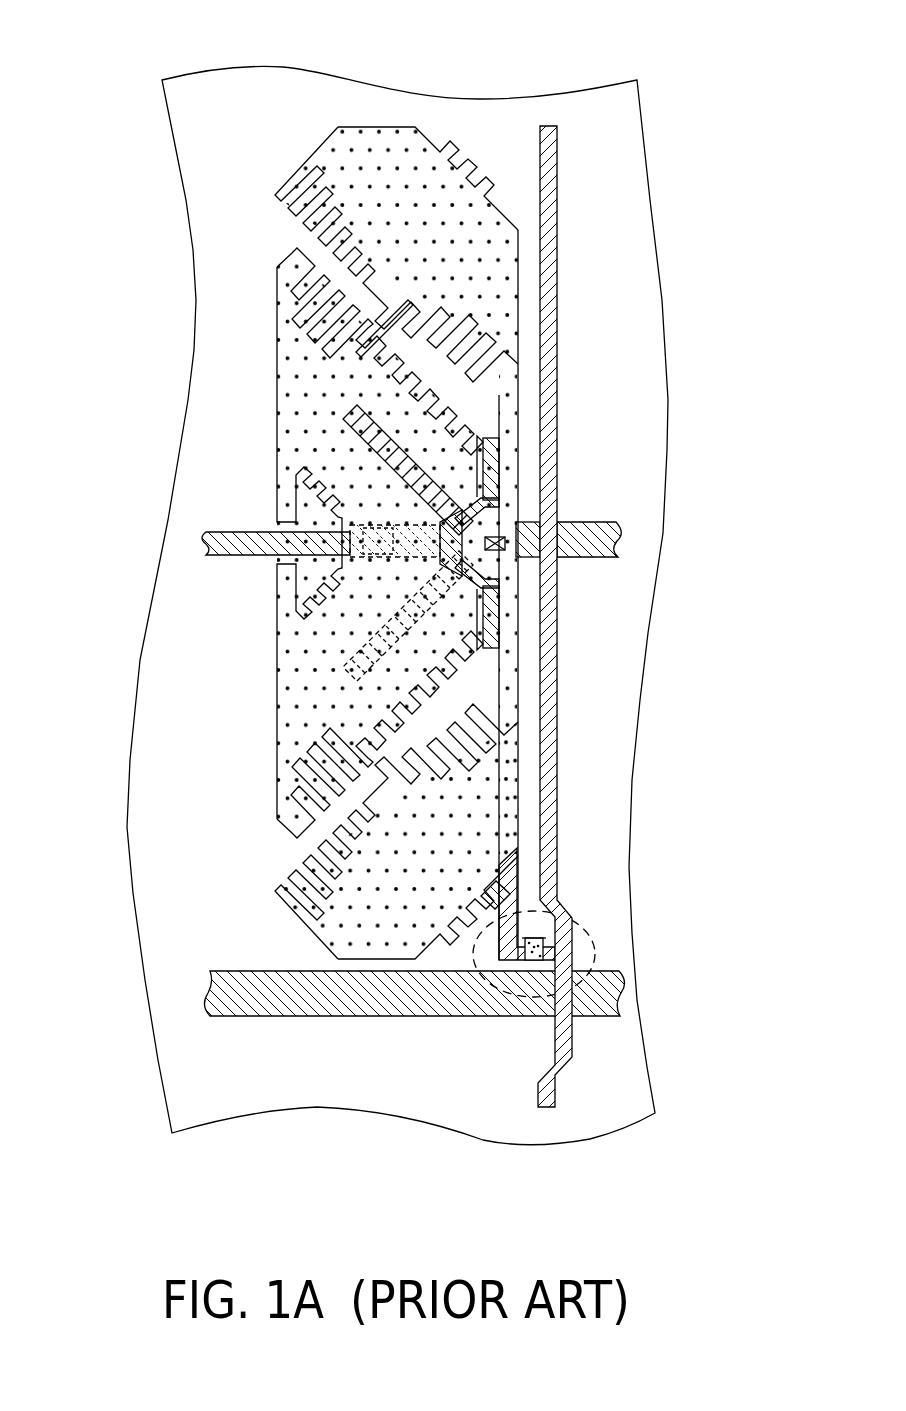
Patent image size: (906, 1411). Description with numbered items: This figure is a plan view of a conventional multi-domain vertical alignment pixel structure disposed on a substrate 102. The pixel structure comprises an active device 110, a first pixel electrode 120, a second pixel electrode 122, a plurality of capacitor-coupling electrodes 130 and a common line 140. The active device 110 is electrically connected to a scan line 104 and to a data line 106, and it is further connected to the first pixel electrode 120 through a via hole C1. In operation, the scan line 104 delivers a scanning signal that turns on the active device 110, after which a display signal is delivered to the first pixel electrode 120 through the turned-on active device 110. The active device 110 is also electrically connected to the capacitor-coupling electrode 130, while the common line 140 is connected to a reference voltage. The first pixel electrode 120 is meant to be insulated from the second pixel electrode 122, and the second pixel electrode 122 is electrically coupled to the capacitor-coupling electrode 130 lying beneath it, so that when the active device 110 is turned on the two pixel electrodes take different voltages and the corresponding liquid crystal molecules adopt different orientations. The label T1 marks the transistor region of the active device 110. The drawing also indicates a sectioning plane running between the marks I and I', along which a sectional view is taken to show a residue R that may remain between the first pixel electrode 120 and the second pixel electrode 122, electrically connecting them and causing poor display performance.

The substrate 102 is at (622, 1100).
The scan line 104 is at (267, 993).
The data line 106 is at (558, 760).
The active device 110 is at (593, 928).
The first pixel electrode 120 is at (395, 193).
The second pixel electrode 122 is at (305, 362).
The capacitor-coupling electrode 130 is at (355, 405).
The common line 140 is at (204, 543).
The via hole C1 is at (518, 548).
The residue R is at (470, 396).
The thin film transistor T1 is at (308, 248).
The sectioning plane I-I' I is at (374, 319).
The sectioning plane I- I' is at (385, 262).